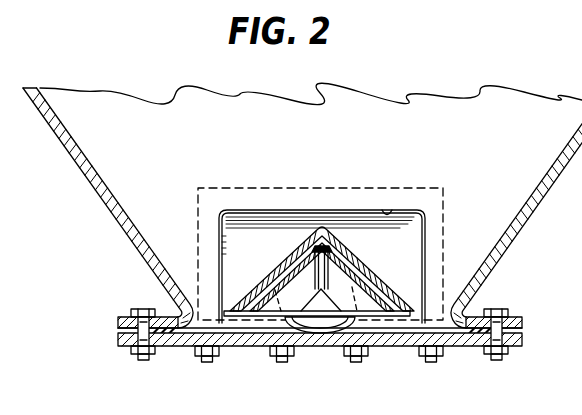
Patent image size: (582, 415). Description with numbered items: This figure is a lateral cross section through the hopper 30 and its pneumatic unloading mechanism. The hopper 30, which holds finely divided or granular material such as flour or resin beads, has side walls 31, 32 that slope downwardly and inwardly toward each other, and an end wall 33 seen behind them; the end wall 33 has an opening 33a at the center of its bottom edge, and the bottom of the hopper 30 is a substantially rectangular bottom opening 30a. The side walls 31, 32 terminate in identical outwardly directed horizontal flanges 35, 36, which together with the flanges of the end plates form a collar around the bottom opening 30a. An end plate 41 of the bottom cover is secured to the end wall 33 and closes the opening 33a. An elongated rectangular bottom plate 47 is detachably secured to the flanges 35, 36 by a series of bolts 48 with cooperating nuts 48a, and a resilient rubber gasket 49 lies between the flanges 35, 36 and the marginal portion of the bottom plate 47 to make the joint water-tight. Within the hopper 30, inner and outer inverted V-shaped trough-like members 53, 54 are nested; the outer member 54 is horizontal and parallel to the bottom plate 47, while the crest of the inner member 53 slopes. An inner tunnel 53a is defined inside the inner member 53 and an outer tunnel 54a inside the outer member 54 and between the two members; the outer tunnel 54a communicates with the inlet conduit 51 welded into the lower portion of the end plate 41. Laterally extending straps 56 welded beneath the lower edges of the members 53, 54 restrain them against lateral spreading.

The hopper 30 is at (424, 84).
The bottom opening 30a is at (464, 311).
The side wall 31 is at (78, 144).
The side wall 32 is at (573, 136).
The end wall 33 is at (330, 137).
The opening 33a is at (386, 210).
The flange 35 is at (118, 318).
The flange 36 is at (522, 323).
The end plate 41 is at (238, 187).
The bottom plate 47 is at (247, 346).
The bolt 48 is at (145, 309).
The nut 48a is at (132, 350).
The resilient gasket 49 is at (152, 329).
The inlet conduit 51 is at (324, 333).
The inner trough-like member 53 is at (267, 285).
The inner tunnel 53a is at (358, 308).
The outer trough-like member 54 is at (283, 257).
The outer tunnel 54a is at (352, 296).
The strap 56 is at (398, 316).